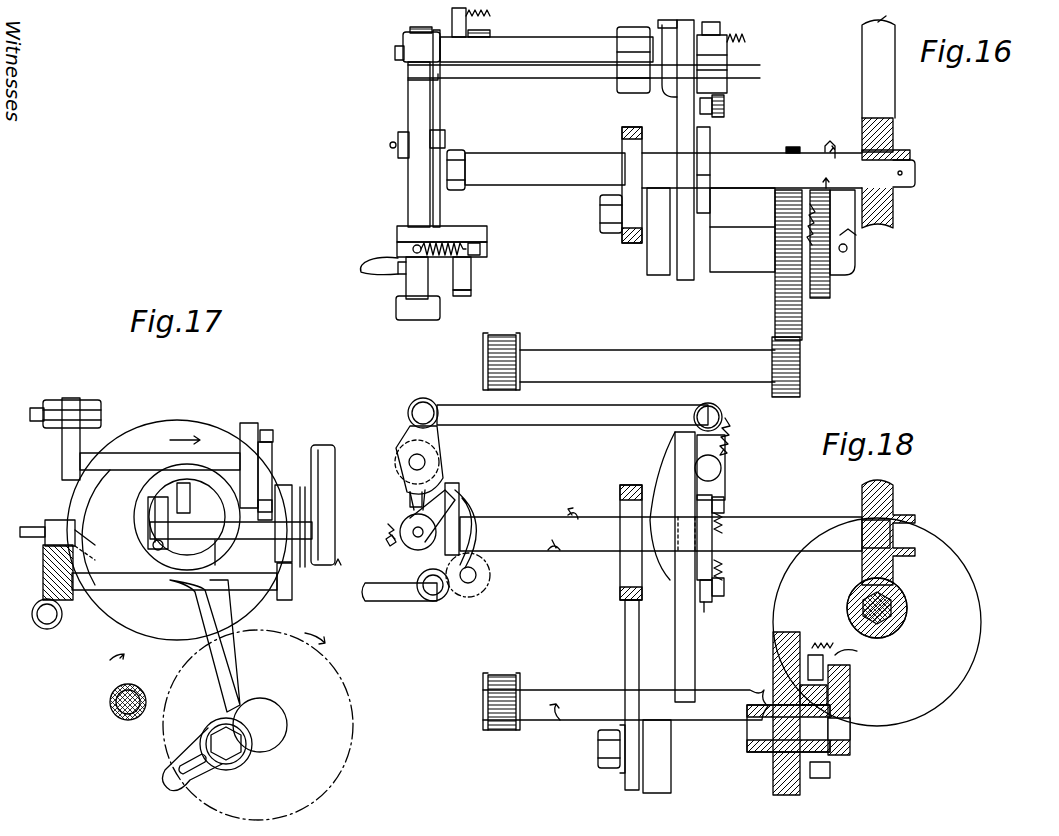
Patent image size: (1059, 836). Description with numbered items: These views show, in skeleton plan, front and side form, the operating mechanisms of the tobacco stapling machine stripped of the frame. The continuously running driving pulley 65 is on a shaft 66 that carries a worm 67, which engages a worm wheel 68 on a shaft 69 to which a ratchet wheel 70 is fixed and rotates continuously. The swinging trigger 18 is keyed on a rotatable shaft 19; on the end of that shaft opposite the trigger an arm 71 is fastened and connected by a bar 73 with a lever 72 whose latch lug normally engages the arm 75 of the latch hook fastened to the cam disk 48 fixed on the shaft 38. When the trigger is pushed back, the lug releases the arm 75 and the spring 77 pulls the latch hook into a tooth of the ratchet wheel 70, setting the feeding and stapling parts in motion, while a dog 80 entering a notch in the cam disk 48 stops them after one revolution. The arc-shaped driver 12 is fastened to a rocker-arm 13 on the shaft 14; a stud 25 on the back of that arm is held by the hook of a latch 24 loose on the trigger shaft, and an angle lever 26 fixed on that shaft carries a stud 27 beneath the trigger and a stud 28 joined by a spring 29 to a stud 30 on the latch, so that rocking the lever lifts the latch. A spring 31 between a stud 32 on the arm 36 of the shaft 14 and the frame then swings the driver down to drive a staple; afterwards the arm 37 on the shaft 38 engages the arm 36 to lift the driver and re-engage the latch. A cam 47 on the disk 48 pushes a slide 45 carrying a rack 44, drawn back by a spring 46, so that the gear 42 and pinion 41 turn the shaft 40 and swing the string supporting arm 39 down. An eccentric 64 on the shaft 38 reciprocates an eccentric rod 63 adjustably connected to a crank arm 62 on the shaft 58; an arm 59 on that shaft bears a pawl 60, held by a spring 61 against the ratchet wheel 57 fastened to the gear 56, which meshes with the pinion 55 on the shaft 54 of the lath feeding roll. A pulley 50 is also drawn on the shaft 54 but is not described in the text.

In FIG. 16, the arc-shaped driver 12 is at (466, 290).
In FIG. 17, the arc-shaped driver 12 is at (303, 567).
In FIG. 18, the arc-shaped driver 12 is at (480, 525).
In FIG. 16, the rocker-arm 13 is at (475, 272).
In FIG. 17, the rocker-arm 13 is at (283, 485).
In FIG. 18, the rocker-arm 13 is at (405, 545).
In FIG. 17, the shaft 14 is at (217, 553).
In FIG. 18, the shaft 14 is at (412, 518).
In FIG. 16, the swinging trigger 18 is at (418, 320).
In FIG. 18, the swinging trigger 18 is at (430, 470).
In FIG. 16, the rotatable shaft 19 is at (406, 282).
In FIG. 17, the rotatable shaft 19 is at (318, 445).
In FIG. 18, the rotatable shaft 19 is at (427, 460).
In FIG. 16, the latch 24 is at (487, 250).
In FIG. 17, the latch 24 is at (268, 442).
In FIG. 17, the stud 25 is at (231, 535).
In FIG. 16, the angle lever 26 is at (487, 228).
In FIG. 17, the angle lever 26 is at (240, 430).
In FIG. 17, the stud 27 is at (262, 500).
In FIG. 16, the stud 28 is at (480, 246).
In FIG. 17, the stud 28 is at (265, 432).
In FIG. 16, the spring 29 is at (447, 236).
In FIG. 16, the stud 30 is at (411, 239).
In FIG. 17, the stud 30 is at (240, 447).
In FIG. 18, the spring 31 is at (386, 524).
In FIG. 16, the stud 32 is at (392, 150).
In FIG. 17, the stud 32 is at (164, 549).
In FIG. 18, the stud 32 is at (388, 540).
In FIG. 16, the arm 36 is at (445, 135).
In FIG. 17, the arm 36 is at (150, 510).
In FIG. 18, the arm 36 is at (410, 495).
In FIG. 16, the arm 37 is at (462, 150).
In FIG. 17, the arm 37 is at (190, 500).
In FIG. 18, the arm 37 is at (460, 490).
In FIG. 16, the shaft 38 is at (527, 153).
In FIG. 18, the shaft 38 is at (553, 515).
In FIG. 16, the string supporting arm 39 is at (368, 258).
In FIG. 17, the string supporting arm 39 is at (290, 600).
In FIG. 18, the string supporting arm 39 is at (420, 588).
In FIG. 17, the shaft 40 is at (240, 590).
In FIG. 18, the shaft 40 is at (448, 595).
In FIG. 16, the pinion 41 is at (418, 28).
In FIG. 17, the pinion 41 is at (68, 606).
In FIG. 18, the pinion 41 is at (440, 600).
In FIG. 16, the gear 42 is at (490, 33).
In FIG. 17, the gear 42 is at (43, 548).
In FIG. 18, the gear 42 is at (490, 592).
In FIG. 17, the rack 44 is at (52, 520).
In FIG. 16, the slide 45 is at (552, 38).
In FIG. 17, the slide 45 is at (99, 534).
In FIG. 16, the spring 46 is at (486, 14).
In FIG. 16, the cam 47 is at (662, 85).
In FIG. 17, the cam 47 is at (102, 557).
In FIG. 18, the cam 47 is at (665, 500).
In FIG. 16, the cam disk 48 is at (688, 282).
In FIG. 17, the cam disk 48 is at (140, 628).
In FIG. 18, the cam disk 48 is at (690, 640).
In FIG. 16, the pulley 50 is at (522, 333).
In FIG. 17, the pulley 50 is at (133, 706).
In FIG. 18, the pulley 50 is at (503, 730).
In FIG. 16, the shaft 54 is at (735, 348).
In FIG. 17, the shaft 54 is at (130, 722).
In FIG. 18, the shaft 54 is at (556, 720).
In FIG. 16, the pinion 55 is at (800, 362).
In FIG. 16, the gear 56 is at (803, 322).
In FIG. 17, the gear 56 is at (118, 770).
In FIG. 18, the gear 56 is at (790, 630).
In FIG. 16, the ratchet wheel 57 is at (830, 288).
In FIG. 18, the ratchet wheel 57 is at (832, 776).
In FIG. 16, the shaft 58 is at (737, 272).
In FIG. 18, the shaft 58 is at (755, 732).
In FIG. 16, the arm 59 is at (856, 266).
In FIG. 18, the arm 59 is at (852, 744).
In FIG. 16, the pawl 60 is at (815, 226).
In FIG. 18, the pawl 60 is at (812, 660).
In FIG. 16, the spring 61 is at (850, 240).
In FIG. 18, the spring 61 is at (921, 650).
In FIG. 16, the crank arm 62 is at (655, 276).
In FIG. 17, the crank arm 62 is at (290, 745).
In FIG. 18, the crank arm 62 is at (672, 773).
In FIG. 16, the eccentric rod 63 is at (618, 240).
In FIG. 17, the eccentric rod 63 is at (232, 654).
In FIG. 18, the eccentric rod 63 is at (638, 660).
In FIG. 16, the eccentric 64 is at (620, 146).
In FIG. 17, the eccentric 64 is at (150, 592).
In FIG. 18, the eccentric 64 is at (632, 570).
In FIG. 18, the driving pulley 65 is at (982, 600).
In FIG. 16, the shaft 66 is at (885, 84).
In FIG. 18, the shaft 66 is at (908, 620).
In FIG. 18, the worm 67 is at (892, 606).
In FIG. 16, the worm wheel 68 is at (910, 152).
In FIG. 18, the worm wheel 68 is at (893, 495).
In FIG. 16, the shaft 69 is at (915, 173).
In FIG. 18, the shaft 69 is at (818, 530).
In FIG. 16, the ratchet wheel 70 is at (712, 142).
In FIG. 18, the ratchet wheel 70 is at (712, 540).
In FIG. 16, the arm 71 is at (403, 48).
In FIG. 17, the arm 71 is at (62, 445).
In FIG. 18, the arm 71 is at (408, 428).
In FIG. 16, the lever 72 is at (730, 58).
In FIG. 18, the lever 72 is at (728, 458).
In FIG. 16, the bar 73 is at (510, 78).
In FIG. 17, the bar 73 is at (100, 402).
In FIG. 18, the bar 73 is at (572, 425).
In FIG. 16, the arm 75 is at (715, 118).
In FIG. 18, the arm 75 is at (708, 602).
In FIG. 16, the spring 77 is at (726, 102).
In FIG. 18, the spring 77 is at (726, 508).
In FIG. 16, the dog 80 is at (676, 26).
In FIG. 17, the dog 80 is at (50, 630).